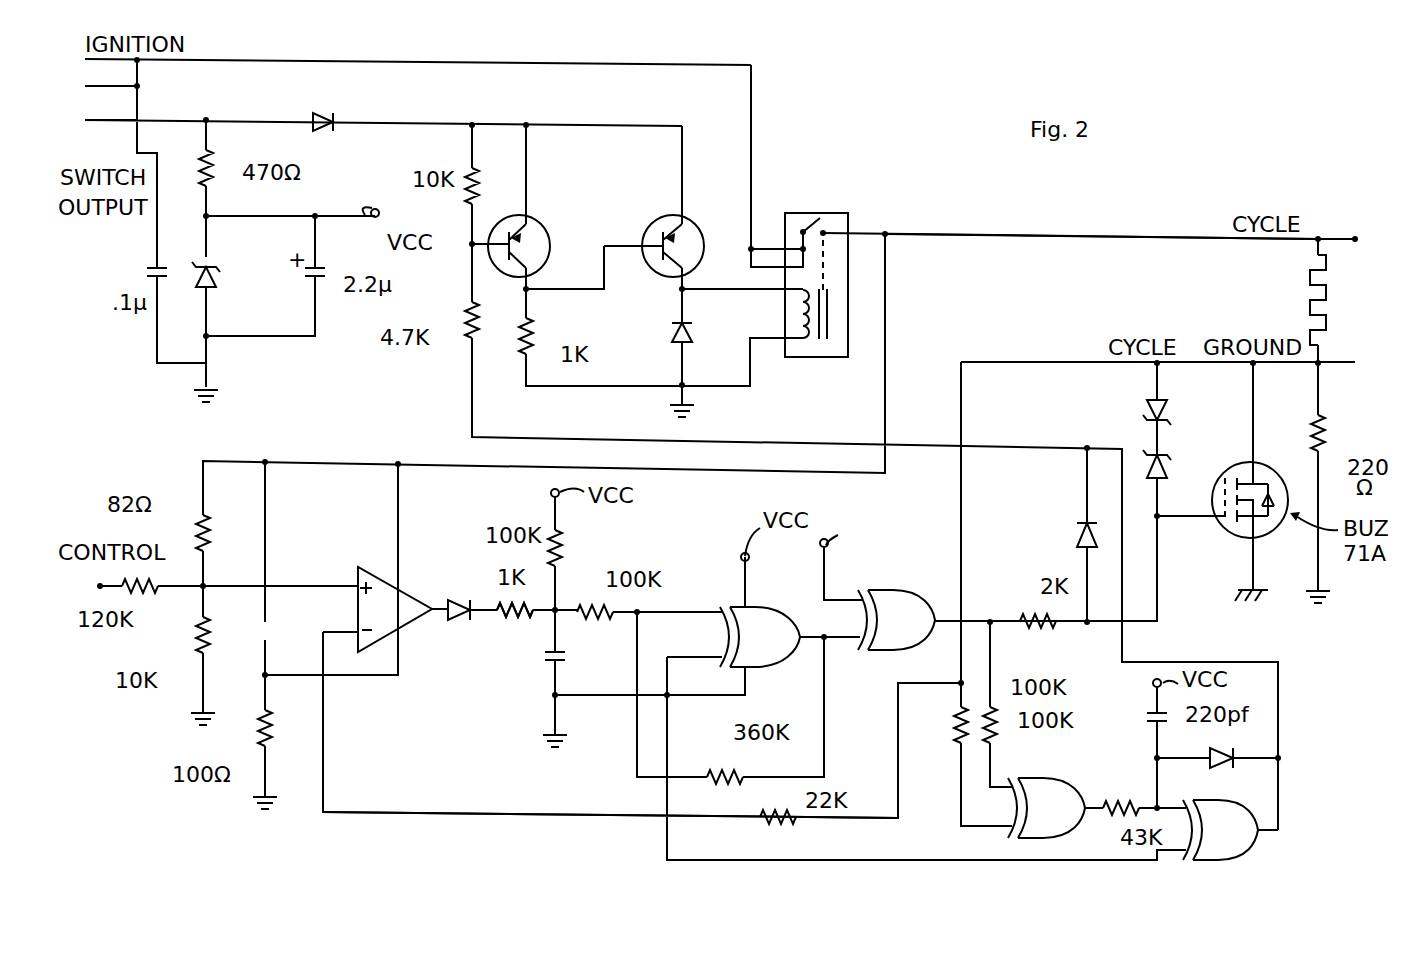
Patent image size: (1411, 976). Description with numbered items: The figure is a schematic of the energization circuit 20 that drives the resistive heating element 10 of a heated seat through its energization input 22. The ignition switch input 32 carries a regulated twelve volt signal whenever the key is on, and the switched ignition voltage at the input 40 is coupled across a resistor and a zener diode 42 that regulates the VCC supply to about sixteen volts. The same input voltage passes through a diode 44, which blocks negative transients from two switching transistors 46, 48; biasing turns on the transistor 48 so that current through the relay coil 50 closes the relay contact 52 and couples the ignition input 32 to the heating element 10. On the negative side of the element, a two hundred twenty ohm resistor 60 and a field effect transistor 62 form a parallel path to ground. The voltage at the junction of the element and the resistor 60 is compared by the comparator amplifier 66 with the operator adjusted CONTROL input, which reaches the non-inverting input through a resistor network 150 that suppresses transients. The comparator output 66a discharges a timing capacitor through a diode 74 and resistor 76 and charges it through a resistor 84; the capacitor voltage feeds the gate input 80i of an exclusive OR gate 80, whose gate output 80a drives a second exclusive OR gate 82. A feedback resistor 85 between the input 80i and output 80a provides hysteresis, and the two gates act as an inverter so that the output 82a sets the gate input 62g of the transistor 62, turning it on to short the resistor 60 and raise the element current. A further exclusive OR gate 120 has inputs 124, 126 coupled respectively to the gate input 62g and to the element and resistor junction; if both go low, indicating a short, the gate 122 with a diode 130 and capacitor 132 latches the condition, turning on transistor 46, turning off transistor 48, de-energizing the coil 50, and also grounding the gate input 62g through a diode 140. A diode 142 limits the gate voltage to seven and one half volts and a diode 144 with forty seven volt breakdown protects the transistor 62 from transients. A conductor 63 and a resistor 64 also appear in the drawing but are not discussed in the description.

The resistive heating element 10 is at (1327, 278).
The energization circuit 20 is at (397, 812).
The energization input 22 is at (1018, 235).
The ignition switch input 32 is at (313, 58).
The switched ignition voltage input 40 is at (110, 118).
The zener diode 42 is at (213, 275).
The diode 44 is at (323, 118).
The switching transistor 46 is at (545, 228).
The switching transistor 48 is at (647, 268).
The relay coil 50 is at (803, 340).
The relay contact 52 is at (815, 221).
The resistor 60 is at (1327, 455).
The field effect transistor 62 is at (1268, 540).
The gate input 62g is at (1190, 516).
The conductor 63 is at (1022, 362).
The resistor 64 is at (792, 815).
The comparator amplifier 66 is at (405, 630).
The comparator amplifier output 66a is at (448, 605).
The diode 74 is at (458, 620).
The resistor 76 is at (535, 605).
The exclusive OR gate 80 is at (765, 672).
The gate input 80i is at (640, 616).
The gate output 80a is at (815, 645).
The second exclusive OR gate 82 is at (890, 598).
The gate output 82a is at (968, 620).
The resistor 84 is at (560, 545).
The feedback resistor 85 is at (742, 778).
The exclusive OR gate 120 is at (1060, 800).
The exclusive OR gate 122 is at (1242, 823).
The gate input 124 is at (995, 740).
The gate input 126 is at (960, 803).
The diode 130 is at (1240, 752).
The capacitor 132 is at (1150, 715).
The diode 140 is at (1078, 537).
The diode 142 is at (1165, 418).
The diode 144 is at (1168, 468).
The resistor network 150 is at (198, 528).